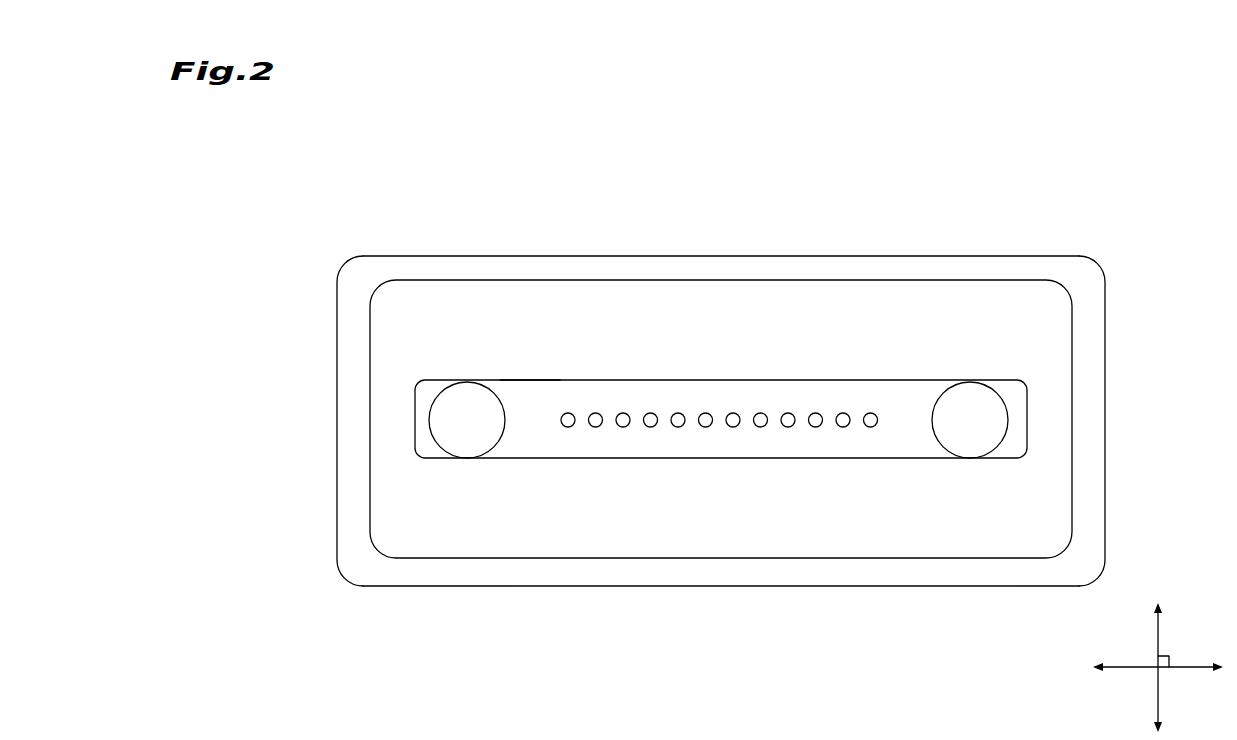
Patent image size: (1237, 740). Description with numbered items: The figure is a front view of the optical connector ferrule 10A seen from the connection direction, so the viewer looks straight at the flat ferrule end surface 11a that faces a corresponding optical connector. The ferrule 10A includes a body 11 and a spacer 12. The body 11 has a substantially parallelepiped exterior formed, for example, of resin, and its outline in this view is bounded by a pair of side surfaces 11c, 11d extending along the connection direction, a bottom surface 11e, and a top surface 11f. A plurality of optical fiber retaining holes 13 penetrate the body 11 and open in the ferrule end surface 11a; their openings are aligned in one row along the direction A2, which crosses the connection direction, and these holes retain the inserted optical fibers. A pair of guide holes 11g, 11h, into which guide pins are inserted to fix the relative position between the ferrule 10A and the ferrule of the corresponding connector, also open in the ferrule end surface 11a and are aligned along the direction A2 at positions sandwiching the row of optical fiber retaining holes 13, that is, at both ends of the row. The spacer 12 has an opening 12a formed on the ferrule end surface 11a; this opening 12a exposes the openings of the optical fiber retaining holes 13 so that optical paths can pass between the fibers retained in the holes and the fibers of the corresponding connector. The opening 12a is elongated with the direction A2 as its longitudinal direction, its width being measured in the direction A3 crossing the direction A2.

The optical connector ferrule 10A is at (1134, 167).
The body 11 is at (782, 250).
The ferrule end surface 11a is at (874, 397).
The side surface 11c is at (370, 455).
The side surface 11d is at (1072, 408).
The bottom surface 11e is at (733, 560).
The top surface 11f is at (701, 280).
The guide hole 11g is at (455, 452).
The guide hole 11h is at (953, 452).
The spacer 12 is at (948, 547).
The opening 12a is at (522, 390).
The optical fiber retaining holes 13 is at (596, 427).
The direction A2 is at (1193, 668).
The direction A3 is at (1158, 636).